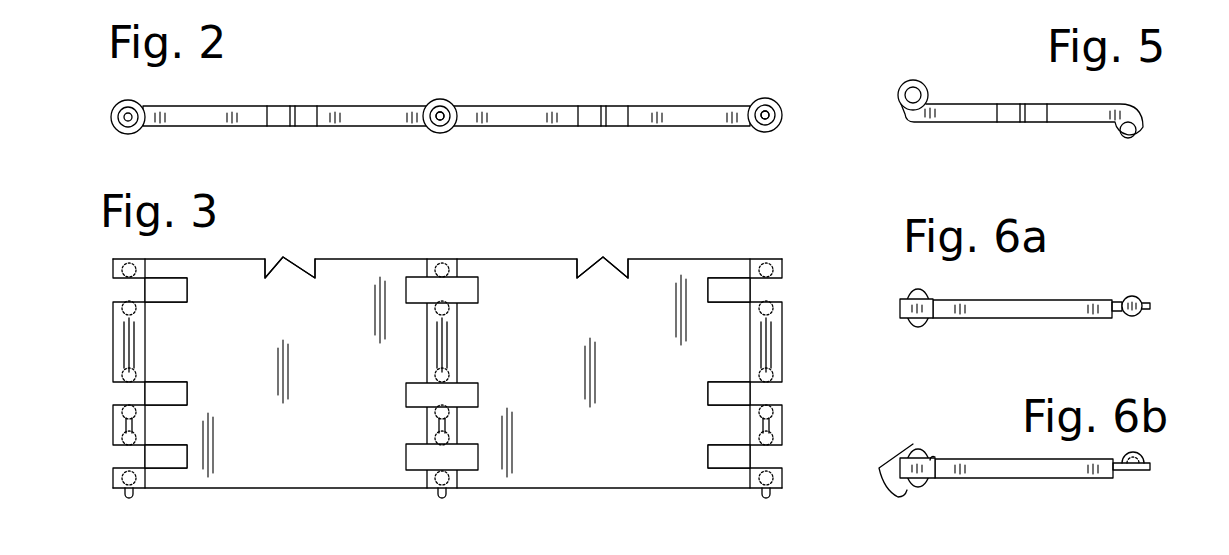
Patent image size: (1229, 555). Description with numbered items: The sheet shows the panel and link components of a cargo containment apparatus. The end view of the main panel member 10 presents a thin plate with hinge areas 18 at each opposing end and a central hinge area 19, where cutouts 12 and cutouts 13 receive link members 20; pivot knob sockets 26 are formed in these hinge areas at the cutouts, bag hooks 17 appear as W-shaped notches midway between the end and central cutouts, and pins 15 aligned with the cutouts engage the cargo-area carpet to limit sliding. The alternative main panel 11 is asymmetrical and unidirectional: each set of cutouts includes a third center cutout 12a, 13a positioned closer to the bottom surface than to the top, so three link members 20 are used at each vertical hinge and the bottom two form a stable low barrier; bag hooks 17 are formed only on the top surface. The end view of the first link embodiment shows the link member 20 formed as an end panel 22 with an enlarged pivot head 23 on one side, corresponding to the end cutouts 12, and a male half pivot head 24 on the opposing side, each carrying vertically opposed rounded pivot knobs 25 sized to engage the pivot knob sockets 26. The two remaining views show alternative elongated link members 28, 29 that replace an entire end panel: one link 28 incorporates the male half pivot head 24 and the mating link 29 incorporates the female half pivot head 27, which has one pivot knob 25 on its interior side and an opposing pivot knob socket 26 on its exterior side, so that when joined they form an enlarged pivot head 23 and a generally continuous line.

In FIG. 2, the main panel member 10 is at (538, 136).
In FIG. 3, the main panel 11 is at (473, 247).
In FIG. 3, the cutouts 12 is at (176, 304).
In FIG. 3, the center cutout 12a is at (187, 392).
In FIG. 3, the cutouts 13 is at (406, 452).
In FIG. 3, the center cutout 13a is at (406, 396).
In FIG. 2, the pins 15 is at (442, 108).
In FIG. 3, the pins 15 is at (130, 497).
In FIG. 2, the bag hooks 17 is at (302, 118).
In FIG. 3, the bag hooks 17 is at (283, 257).
In FIG. 5, the bag hooks 17 is at (1030, 118).
In FIG. 2, the hinge areas 18 is at (133, 101).
In FIG. 3, the hinge areas 18 is at (147, 352).
In FIG. 2, the central hinge area 19 is at (438, 134).
In FIG. 3, the central hinge area 19 is at (458, 328).
In FIG. 5, the link members 20 is at (1022, 106).
In FIG. 6A, the link members 20 is at (1015, 339).
In FIG. 6B, the link members 20 is at (928, 408).
In FIG. 5, the end panels 22 is at (965, 140).
In FIG. 5, the enlarged pivot head 23 is at (883, 69).
In FIG. 6A, the enlarged pivot head 23 is at (902, 320).
In FIG. 6B, the enlarged pivot head 23 is at (928, 458).
In FIG. 5, the male half pivot head 24 is at (1145, 133).
In FIG. 6A, the male half pivot head 24 is at (1148, 300).
In FIG. 5, the pivot knobs 25 is at (879, 87).
In FIG. 6B, the pivot knobs 25 is at (882, 470).
In FIG. 3, the pivot knob sockets 26 is at (132, 273).
In FIG. 6B, the female half pivot head 27 is at (1148, 463).
In FIG. 6A, the alternative link member 28 is at (1047, 318).
In FIG. 6B, the alternative link member 29 is at (953, 462).